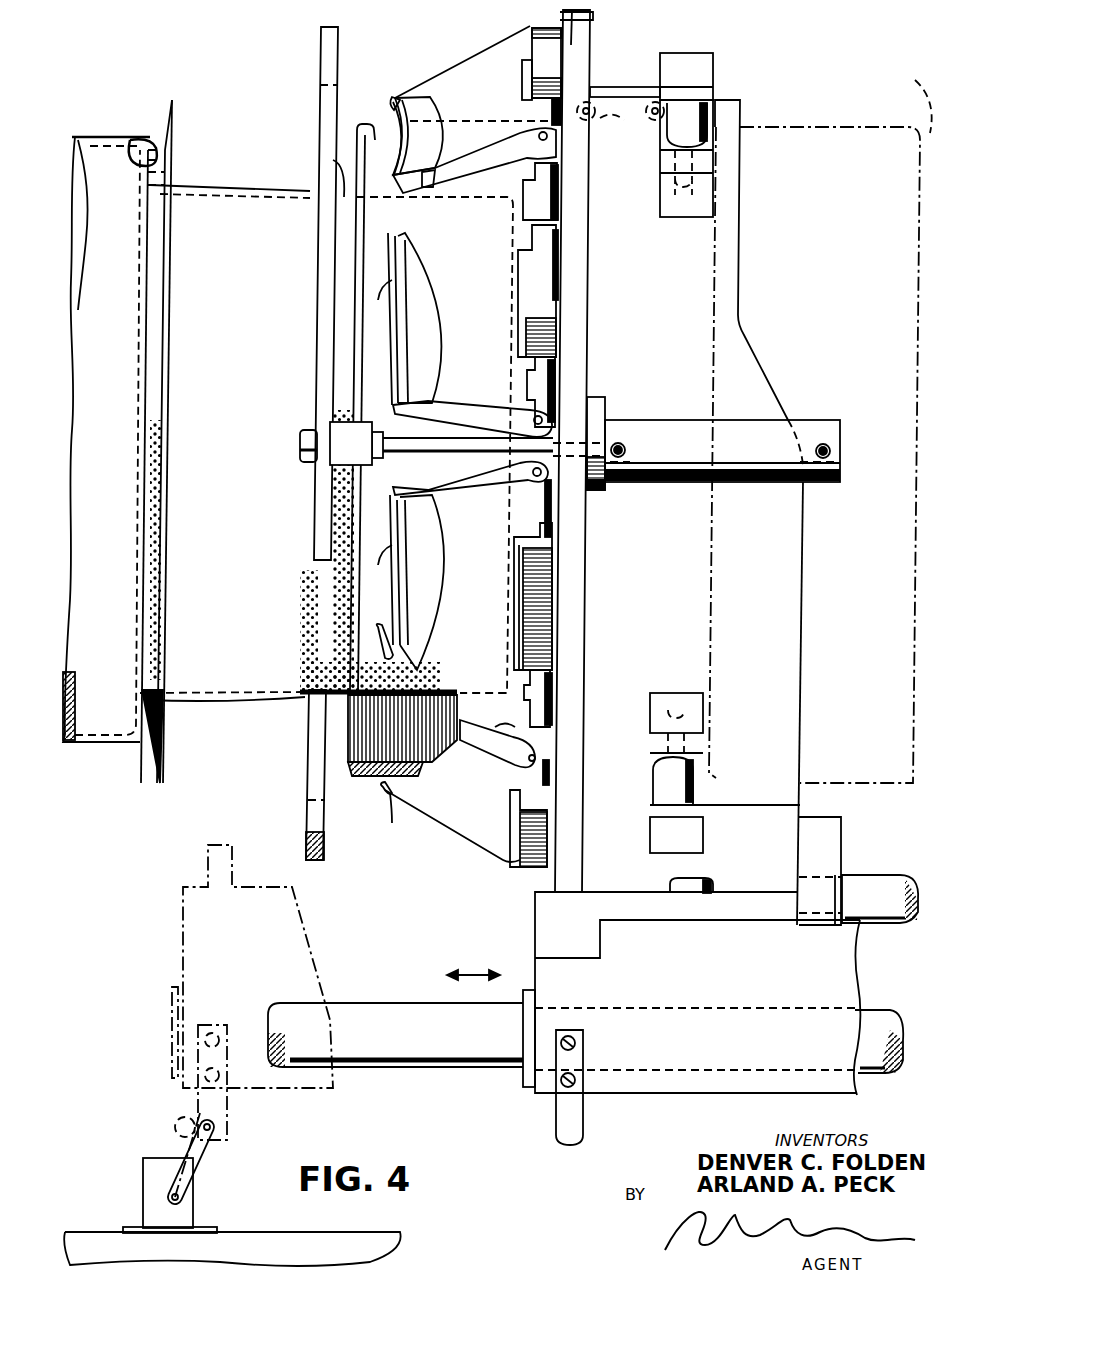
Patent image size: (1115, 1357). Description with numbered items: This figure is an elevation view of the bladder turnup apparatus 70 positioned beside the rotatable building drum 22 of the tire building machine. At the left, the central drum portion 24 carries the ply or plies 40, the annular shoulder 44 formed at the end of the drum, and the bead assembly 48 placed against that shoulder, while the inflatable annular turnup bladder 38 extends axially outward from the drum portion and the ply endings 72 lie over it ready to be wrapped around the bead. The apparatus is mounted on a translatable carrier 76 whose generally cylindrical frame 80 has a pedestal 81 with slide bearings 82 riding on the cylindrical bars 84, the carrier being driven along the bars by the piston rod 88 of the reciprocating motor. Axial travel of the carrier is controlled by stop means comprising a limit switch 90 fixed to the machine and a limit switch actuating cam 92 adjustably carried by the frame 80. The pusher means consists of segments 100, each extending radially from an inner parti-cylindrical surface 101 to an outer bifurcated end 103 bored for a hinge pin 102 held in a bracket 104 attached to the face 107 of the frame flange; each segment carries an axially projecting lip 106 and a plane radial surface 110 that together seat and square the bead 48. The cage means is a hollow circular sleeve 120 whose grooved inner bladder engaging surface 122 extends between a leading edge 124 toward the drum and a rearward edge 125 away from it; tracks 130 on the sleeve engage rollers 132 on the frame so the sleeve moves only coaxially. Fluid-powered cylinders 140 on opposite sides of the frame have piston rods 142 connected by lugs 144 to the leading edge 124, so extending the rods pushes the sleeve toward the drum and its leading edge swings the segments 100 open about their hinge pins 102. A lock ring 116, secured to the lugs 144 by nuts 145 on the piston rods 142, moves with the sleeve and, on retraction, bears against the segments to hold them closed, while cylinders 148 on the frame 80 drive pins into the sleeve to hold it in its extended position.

The rotatable building drum 22 is at (76, 137).
The central drum portion 24 is at (68, 745).
The ply or plies 40 is at (113, 738).
The annular shoulders 44 is at (141, 148).
The bead assembly 48 is at (166, 152).
The ply endings 72 is at (238, 704).
The lock ring 116 is at (321, 63).
The leading edge 124 is at (357, 134).
The inflatable annular turnup bladder 38 is at (340, 180).
The hollow circular sleeve 120 is at (373, 115).
The rearward edge 125 is at (911, 94).
The inner cylindrical bladder engaging surface 122 is at (352, 732).
The inner parti-cylindrical surface 101 is at (395, 100).
The plane radial surface 110 is at (418, 100).
The axially projecting lip 106 is at (385, 564).
The pusher member or segment 100 is at (477, 53).
The hinge pin 102 is at (560, 140).
The bracket 104 is at (548, 50).
The outer bifurcated end 103 is at (545, 376).
The bladder turnup apparatus 70 is at (655, 40).
The face of the flange 107 is at (561, 10).
The rollers 132 is at (650, 100).
The tracks 130 is at (614, 132).
The cylinders 148 is at (712, 78).
The generally cylindrical frame 80 is at (740, 117).
The piston rod 142 is at (455, 450).
The lug 144 is at (348, 440).
The nuts 145 is at (300, 448).
The fluid-powered cylinders 140 is at (825, 482).
The translatable carrier 76 is at (812, 812).
The piston rod 88 is at (888, 874).
The pedestal 81 is at (570, 968).
The cylindrical bars 84 is at (382, 1010).
The slide bearings 82 is at (523, 1080).
The limit switch actuating cam 92 is at (557, 1122).
The limit switch 90 is at (153, 1160).